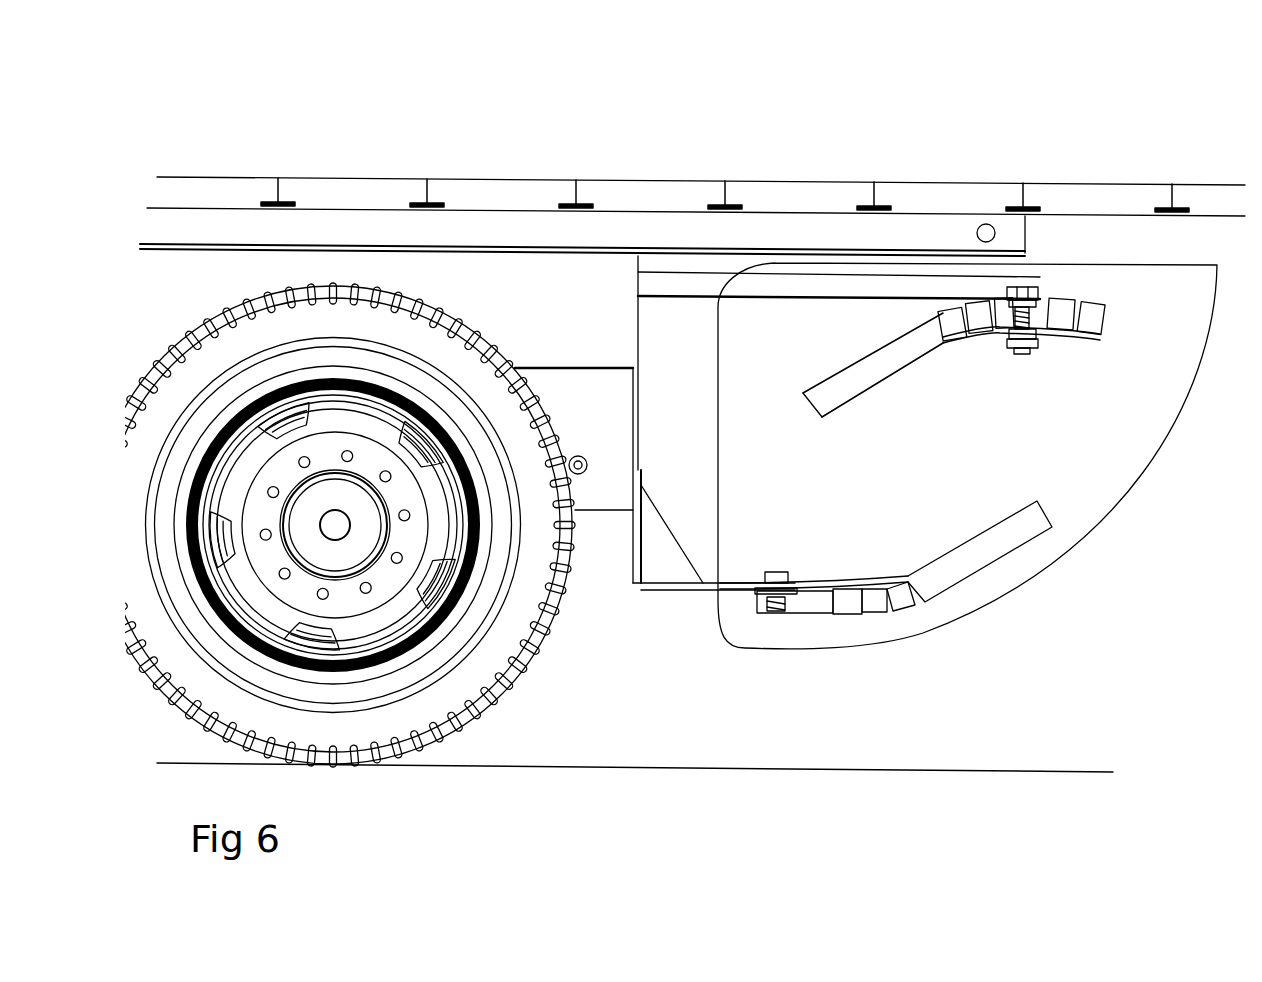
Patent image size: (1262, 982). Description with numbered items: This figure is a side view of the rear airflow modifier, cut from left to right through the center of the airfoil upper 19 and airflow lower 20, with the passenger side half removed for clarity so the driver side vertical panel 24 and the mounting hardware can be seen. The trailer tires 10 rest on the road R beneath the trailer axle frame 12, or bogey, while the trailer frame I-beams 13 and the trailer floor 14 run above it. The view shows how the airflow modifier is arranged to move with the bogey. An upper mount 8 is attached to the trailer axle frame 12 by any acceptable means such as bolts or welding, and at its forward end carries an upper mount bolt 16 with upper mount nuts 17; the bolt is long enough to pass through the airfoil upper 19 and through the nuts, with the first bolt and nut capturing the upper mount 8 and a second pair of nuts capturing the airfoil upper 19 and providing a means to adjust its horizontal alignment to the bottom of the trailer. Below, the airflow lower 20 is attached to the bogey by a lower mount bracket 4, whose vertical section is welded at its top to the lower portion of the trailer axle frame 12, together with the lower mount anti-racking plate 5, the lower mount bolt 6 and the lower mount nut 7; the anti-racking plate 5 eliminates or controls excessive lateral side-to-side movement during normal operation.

The lower mount bracket 4 is at (635, 583).
The anti-racking plate 5 is at (735, 587).
The lower mount bolt 6 is at (783, 580).
The lower mount nut 7 is at (790, 600).
The upper mount 8 is at (810, 283).
The trailer tires 10 is at (492, 694).
The trailer axle frame (bogey) 12 is at (423, 272).
The trailer frame I-beam 13 is at (872, 200).
The trailer floor 14 is at (673, 182).
The upper mount bolt 16 is at (1030, 290).
The upper mount nut 17 is at (1033, 347).
The airfoil upper 19 is at (1088, 330).
The airflow lower 20 is at (983, 555).
The driver side vertical panel 24 is at (1122, 490).
The road R is at (1053, 771).